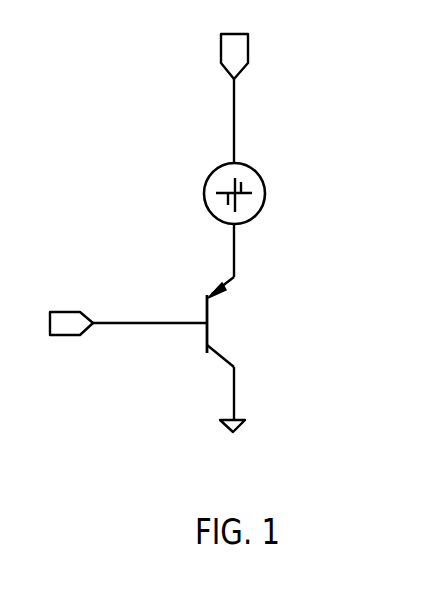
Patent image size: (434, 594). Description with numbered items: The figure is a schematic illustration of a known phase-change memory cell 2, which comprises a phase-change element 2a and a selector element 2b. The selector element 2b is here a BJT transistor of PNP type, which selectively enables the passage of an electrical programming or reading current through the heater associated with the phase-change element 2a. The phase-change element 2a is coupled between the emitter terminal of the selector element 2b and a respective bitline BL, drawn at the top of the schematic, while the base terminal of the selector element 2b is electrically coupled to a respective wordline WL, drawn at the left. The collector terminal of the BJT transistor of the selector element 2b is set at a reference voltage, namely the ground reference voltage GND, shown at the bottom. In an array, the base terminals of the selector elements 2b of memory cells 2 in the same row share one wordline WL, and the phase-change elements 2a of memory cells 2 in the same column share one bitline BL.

The memory cell 2 is at (306, 201).
The phase-change element 2a is at (212, 178).
The selector element 2b is at (208, 328).
The bitline BL is at (217, 98).
The wordline WL is at (127, 307).
The ground reference voltage GND is at (242, 427).